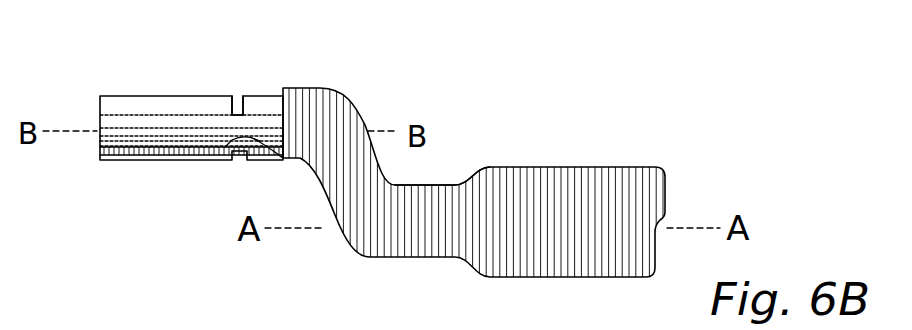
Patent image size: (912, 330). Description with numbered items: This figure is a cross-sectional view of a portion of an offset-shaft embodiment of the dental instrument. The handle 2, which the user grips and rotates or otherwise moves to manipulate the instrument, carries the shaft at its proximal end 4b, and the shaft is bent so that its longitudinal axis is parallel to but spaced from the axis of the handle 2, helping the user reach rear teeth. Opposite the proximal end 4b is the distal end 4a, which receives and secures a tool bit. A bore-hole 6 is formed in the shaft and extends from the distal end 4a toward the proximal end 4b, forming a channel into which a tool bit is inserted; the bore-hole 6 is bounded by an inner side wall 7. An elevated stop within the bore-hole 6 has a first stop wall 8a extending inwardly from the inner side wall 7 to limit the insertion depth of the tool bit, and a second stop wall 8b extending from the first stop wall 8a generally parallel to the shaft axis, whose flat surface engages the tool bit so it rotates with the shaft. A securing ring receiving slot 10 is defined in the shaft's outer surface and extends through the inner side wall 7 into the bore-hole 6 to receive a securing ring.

The handle 2 is at (603, 158).
The distal end 4a is at (105, 162).
The proximal end 4b is at (452, 178).
The bore-hole 6 is at (101, 140).
The inner side wall 7 is at (128, 114).
The first stop wall 8a is at (228, 146).
The second stop wall 8b is at (278, 160).
The securing ring receiving slot 10 is at (238, 96).